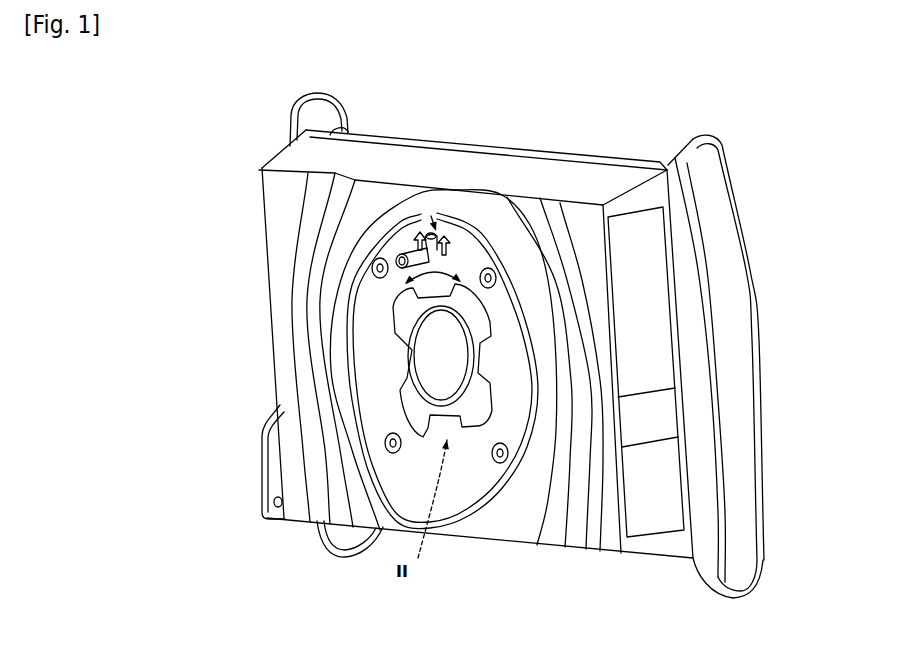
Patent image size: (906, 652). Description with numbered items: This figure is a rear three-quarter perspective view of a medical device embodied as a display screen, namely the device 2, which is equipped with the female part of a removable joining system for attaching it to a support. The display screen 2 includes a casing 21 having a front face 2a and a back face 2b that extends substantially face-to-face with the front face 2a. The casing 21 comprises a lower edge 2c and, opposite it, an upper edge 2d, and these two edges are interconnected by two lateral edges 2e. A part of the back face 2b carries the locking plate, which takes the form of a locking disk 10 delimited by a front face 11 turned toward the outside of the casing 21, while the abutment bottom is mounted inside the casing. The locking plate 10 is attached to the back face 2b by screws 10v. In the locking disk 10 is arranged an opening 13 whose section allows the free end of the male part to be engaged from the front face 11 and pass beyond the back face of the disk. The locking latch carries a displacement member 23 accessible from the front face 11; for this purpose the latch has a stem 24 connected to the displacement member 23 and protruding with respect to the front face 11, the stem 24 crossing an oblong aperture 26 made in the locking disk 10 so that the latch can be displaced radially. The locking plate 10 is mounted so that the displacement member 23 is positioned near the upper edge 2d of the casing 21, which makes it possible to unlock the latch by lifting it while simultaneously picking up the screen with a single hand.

The device 2 is at (577, 135).
The front face 2a is at (632, 158).
The back face 2b is at (291, 213).
The lower edge 2c is at (563, 552).
The upper edge 2d is at (358, 152).
The lateral edges 2e is at (273, 385).
The casing 21 is at (286, 153).
The locking disk 10 is at (460, 237).
The screws 10v is at (495, 462).
The front face 11 is at (374, 302).
The opening 13 is at (452, 373).
The displacement member 23 is at (410, 247).
The stem 24 is at (451, 254).
The oblong aperture 26 is at (433, 232).